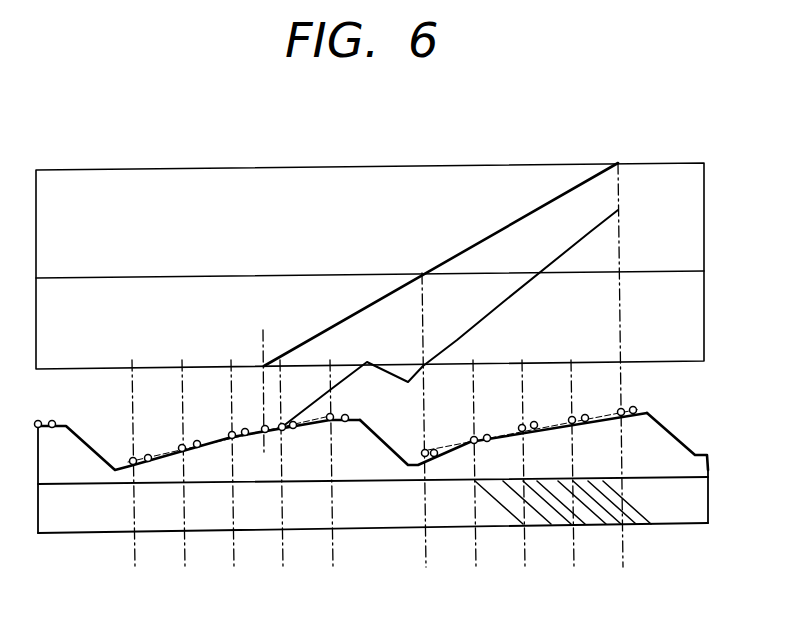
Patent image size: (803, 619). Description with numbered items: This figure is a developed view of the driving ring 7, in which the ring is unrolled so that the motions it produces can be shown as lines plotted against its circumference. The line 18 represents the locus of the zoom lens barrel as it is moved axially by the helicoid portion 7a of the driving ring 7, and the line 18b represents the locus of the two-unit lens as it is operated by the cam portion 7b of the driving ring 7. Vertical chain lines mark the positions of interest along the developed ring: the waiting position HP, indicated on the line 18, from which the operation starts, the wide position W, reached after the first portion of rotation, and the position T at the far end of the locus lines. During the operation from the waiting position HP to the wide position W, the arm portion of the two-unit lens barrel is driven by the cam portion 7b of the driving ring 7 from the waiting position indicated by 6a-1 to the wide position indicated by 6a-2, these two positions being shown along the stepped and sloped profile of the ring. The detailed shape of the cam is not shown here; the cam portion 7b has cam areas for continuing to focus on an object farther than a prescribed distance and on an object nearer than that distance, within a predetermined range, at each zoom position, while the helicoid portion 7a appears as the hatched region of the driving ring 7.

The line representative of the locus of the zoom lens barrel 18 is at (507, 224).
The line representative of the locus of the two-unit lens 18b is at (503, 303).
The arm portion at waiting position 6a-1 is at (263, 426).
The arm portion at wide position 6a-2 is at (420, 450).
The driving ring 7 is at (403, 517).
The helicoid portion 7a is at (562, 528).
The cam portion 7b is at (655, 421).
The waiting position HP is at (263, 367).
The wide position W is at (422, 272).
The tele position T is at (617, 163).